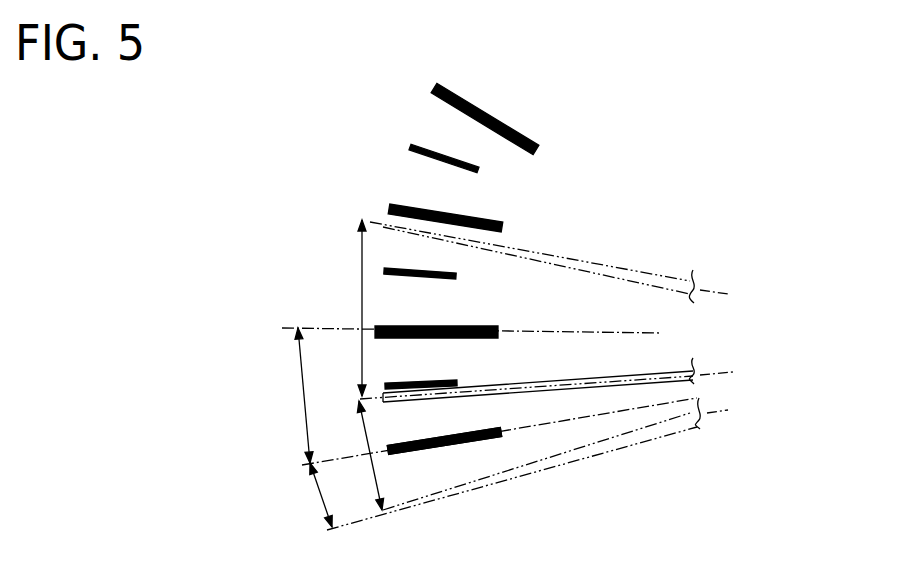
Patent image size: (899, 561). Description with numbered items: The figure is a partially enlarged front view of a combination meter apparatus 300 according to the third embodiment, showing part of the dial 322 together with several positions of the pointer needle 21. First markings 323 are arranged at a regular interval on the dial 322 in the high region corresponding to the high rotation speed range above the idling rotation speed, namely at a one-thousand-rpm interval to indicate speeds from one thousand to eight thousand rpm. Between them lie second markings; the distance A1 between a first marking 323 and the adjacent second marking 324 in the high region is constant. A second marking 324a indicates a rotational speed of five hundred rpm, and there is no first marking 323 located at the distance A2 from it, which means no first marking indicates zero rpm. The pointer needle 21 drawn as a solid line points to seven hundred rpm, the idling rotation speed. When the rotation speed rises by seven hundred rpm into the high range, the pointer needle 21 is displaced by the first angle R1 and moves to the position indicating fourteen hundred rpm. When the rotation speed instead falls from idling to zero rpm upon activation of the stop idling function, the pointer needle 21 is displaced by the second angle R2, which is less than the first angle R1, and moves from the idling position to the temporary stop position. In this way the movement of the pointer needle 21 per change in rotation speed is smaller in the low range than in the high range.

The combination meter apparatus 300 is at (686, 165).
The first marking 323 is at (443, 90).
The second marking 324 is at (410, 205).
The second marking 324a is at (470, 433).
The pointer needle 21 is at (650, 270).
The dial 322 is at (462, 455).
The first angle R1 is at (345, 308).
The second angle R2 is at (363, 455).
The distance A1 is at (290, 395).
The distance A2 is at (311, 495).